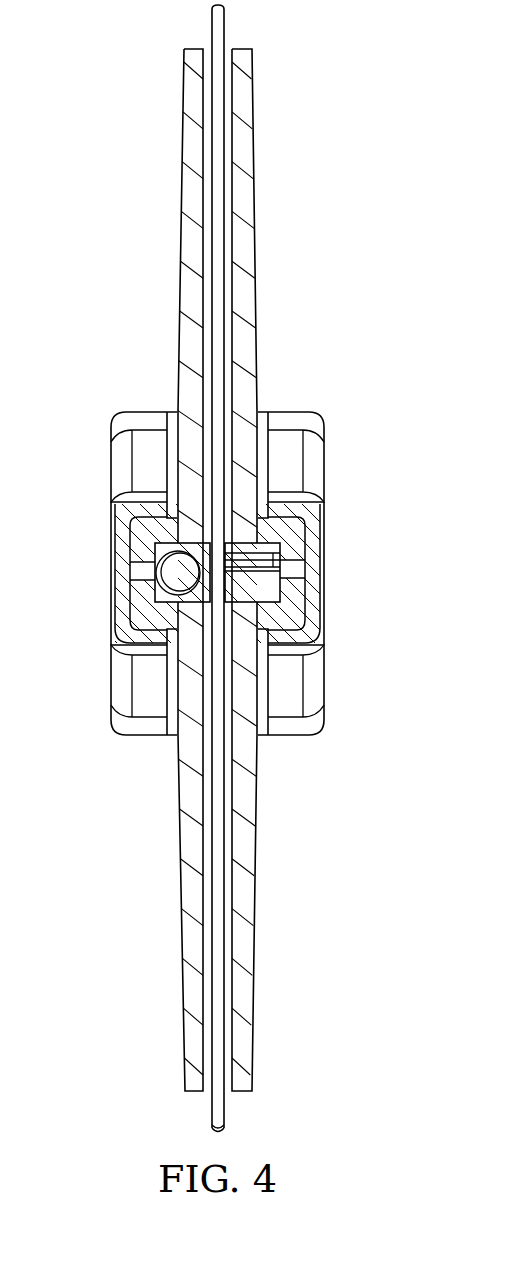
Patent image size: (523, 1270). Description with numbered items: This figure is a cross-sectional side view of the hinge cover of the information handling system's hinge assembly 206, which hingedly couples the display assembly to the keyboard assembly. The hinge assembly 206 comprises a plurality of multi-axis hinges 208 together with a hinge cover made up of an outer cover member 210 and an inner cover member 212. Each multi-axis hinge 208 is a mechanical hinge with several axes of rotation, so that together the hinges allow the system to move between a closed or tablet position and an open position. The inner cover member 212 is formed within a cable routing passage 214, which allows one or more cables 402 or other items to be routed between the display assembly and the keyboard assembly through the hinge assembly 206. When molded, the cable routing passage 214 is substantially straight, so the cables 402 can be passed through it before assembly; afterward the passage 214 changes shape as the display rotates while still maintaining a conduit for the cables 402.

The cable 402 is at (211, 30).
The cable routing passage 214 is at (257, 800).
The outer cover member 210 is at (112, 464).
The hinge assembly 206 is at (112, 683).
The multi-axis hinge 208 is at (112, 606).
The inner cover member 212 is at (268, 592).